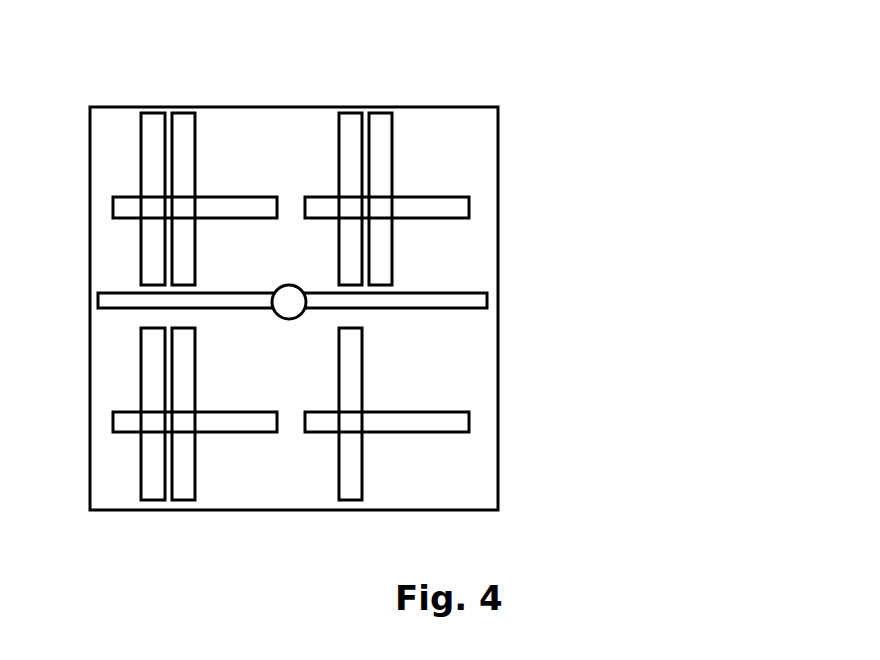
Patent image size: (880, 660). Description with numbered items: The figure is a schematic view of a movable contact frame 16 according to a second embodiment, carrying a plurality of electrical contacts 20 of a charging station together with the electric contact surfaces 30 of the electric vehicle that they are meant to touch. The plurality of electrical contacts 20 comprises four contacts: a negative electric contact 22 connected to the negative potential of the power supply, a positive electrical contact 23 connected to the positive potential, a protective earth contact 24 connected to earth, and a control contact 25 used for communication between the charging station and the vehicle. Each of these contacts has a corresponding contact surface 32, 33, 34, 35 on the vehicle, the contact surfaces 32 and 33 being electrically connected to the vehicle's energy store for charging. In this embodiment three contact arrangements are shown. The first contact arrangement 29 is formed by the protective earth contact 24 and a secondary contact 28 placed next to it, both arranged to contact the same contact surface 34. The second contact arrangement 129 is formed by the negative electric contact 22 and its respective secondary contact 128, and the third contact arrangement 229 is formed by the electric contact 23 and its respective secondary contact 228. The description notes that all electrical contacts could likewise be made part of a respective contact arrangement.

The contact frame 16 is at (498, 87).
The plurality of electrical contacts 20 is at (150, 157).
The negative electric contact 22 is at (132, 179).
The positive electrical contact 23 is at (148, 384).
The protective earth contact 24 is at (347, 158).
The control contact 25 is at (349, 404).
The secondary contact 28 is at (383, 167).
The secondary contact 128 is at (187, 165).
The secondary contact 228 is at (182, 489).
The first contact arrangement 29 is at (360, 165).
The second contact arrangement 129 is at (186, 151).
The third contact arrangement 229 is at (128, 456).
The electric contact surfaces 30 is at (227, 207).
The contact surface 32 is at (195, 145).
The contact surface 33 is at (200, 420).
The contact surface 34 is at (450, 206).
The contact surface 35 is at (404, 423).